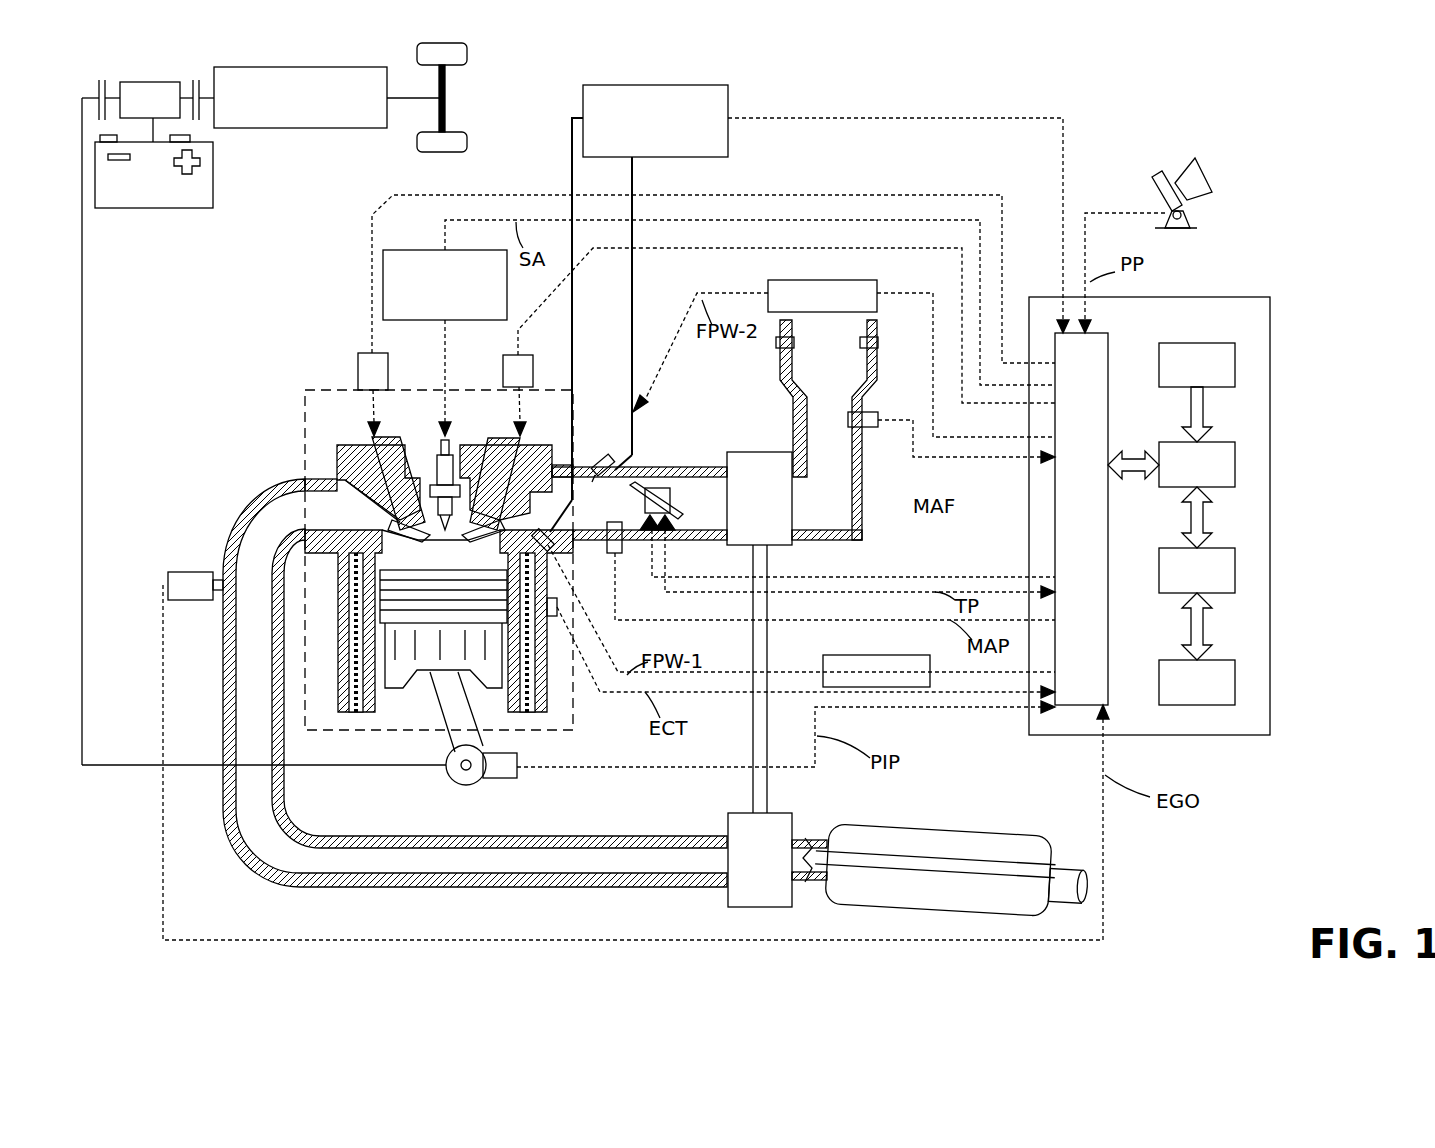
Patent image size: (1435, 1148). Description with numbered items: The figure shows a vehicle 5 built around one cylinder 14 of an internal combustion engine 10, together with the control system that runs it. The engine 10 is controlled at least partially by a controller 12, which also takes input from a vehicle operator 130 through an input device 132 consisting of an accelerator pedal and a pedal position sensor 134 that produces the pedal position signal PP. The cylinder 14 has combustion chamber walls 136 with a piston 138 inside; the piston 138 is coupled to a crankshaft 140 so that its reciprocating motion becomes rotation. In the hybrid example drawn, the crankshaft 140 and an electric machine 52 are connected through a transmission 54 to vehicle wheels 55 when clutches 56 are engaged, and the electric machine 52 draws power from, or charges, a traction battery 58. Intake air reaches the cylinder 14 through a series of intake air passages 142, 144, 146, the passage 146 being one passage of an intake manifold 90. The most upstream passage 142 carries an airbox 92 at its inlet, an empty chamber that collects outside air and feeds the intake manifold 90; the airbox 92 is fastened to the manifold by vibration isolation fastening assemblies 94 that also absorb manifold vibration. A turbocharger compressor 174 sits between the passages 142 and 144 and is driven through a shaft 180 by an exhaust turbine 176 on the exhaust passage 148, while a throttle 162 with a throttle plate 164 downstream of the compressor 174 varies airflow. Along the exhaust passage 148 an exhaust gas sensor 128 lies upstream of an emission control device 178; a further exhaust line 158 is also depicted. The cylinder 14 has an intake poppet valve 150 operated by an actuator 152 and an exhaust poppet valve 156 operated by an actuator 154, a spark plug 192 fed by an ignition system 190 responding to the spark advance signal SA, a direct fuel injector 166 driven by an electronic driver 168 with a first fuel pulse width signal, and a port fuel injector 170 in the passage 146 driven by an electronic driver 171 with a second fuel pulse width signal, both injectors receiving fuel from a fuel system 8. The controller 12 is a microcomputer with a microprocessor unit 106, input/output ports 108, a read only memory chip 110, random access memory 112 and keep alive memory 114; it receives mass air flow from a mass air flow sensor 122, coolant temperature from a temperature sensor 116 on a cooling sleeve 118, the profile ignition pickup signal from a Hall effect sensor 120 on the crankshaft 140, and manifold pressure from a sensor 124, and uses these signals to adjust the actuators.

The vehicle 5 is at (1245, 858).
The fuel system 8 is at (692, 86).
The internal combustion engine 10 is at (262, 396).
The controller 12 is at (1270, 300).
The cylinder 14 is at (372, 560).
The electric machine 52 is at (156, 82).
The transmission 54 is at (370, 128).
The vehicle wheels 55 is at (450, 152).
The clutch 56 is at (98, 85).
The traction battery 58 is at (150, 208).
The intake manifold 90 is at (288, 426).
The airbox 92 is at (828, 430).
The vibration isolation fastening assemblies 94 is at (779, 348).
The microprocessor unit 106 is at (1237, 460).
The input/output ports 108 is at (1112, 343).
The read only memory chip 110 is at (1237, 365).
The random access memory 112 is at (1237, 575).
The keep alive memory 114 is at (1237, 685).
The temperature sensor 116 is at (556, 617).
The cooling sleeve 118 is at (552, 625).
The Hall effect sensor 120 is at (506, 778).
The mass air flow sensor 122 is at (868, 428).
The manifold pressure sensor 124 is at (620, 556).
The exhaust gas sensor 128 is at (168, 578).
The vehicle operator 130 is at (1208, 190).
The input device 132 is at (1155, 195).
The pedal position sensor 134 is at (1190, 216).
The combustion chamber walls 136 is at (383, 700).
The piston 138 is at (425, 660).
The crankshaft 140 is at (452, 785).
The intake air passage 142 is at (707, 495).
The intake air passage 144 is at (705, 502).
The intake air passage 146 is at (612, 502).
The exhaust passage 148 is at (490, 679).
The intake poppet valve 150 is at (458, 465).
The actuator 152 is at (504, 368).
The actuator 154 is at (360, 362).
The exhaust poppet valve 156 is at (355, 495).
The exhaust passage 158 is at (560, 887).
The throttle 162 is at (668, 490).
The throttle plate 164 is at (650, 488).
The fuel injector 166 is at (510, 527).
The electronic driver 168 is at (824, 655).
The fuel injector 170 is at (600, 457).
The electronic driver 171 is at (770, 283).
The compressor 174 is at (759, 498).
The exhaust turbine 176 is at (760, 860).
The emission control device 178 is at (1010, 838).
The shaft 180 is at (768, 778).
The ignition system 190 is at (397, 250).
The spark plug 192 is at (438, 456).